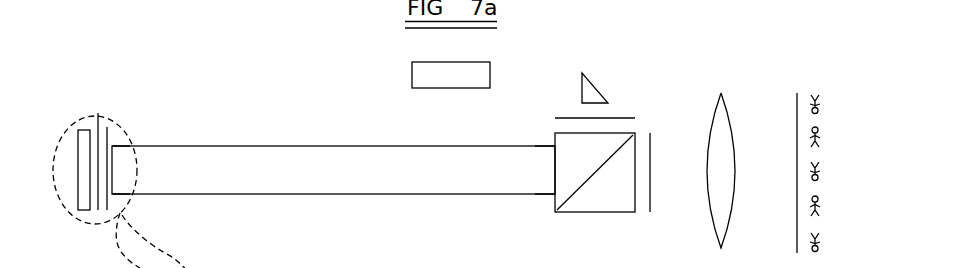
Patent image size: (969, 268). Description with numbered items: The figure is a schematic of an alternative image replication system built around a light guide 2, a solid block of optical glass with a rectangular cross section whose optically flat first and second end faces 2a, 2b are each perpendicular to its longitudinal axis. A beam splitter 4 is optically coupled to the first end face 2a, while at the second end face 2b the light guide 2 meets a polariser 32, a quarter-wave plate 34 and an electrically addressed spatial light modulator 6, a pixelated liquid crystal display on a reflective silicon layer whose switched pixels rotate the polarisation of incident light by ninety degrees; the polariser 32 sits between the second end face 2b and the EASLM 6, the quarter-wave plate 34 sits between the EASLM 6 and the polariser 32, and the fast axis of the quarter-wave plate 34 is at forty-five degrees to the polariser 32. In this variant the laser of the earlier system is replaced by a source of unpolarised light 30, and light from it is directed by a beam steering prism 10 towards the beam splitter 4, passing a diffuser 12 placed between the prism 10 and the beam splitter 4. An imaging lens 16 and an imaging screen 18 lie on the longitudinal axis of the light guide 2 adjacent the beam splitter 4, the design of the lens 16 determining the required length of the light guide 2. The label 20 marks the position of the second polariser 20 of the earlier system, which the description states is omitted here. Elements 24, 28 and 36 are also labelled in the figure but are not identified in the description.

The light guide 2 is at (320, 196).
The first end face 2a is at (553, 173).
The second end face 2b is at (126, 143).
The beam splitter 4 is at (593, 177).
The electrically addressed spatial light modulator 6 is at (77, 170).
The beam steering prism 10 is at (578, 90).
The diffuser 12 is at (622, 117).
The imaging lens 16 is at (722, 247).
The imaging screen 18 is at (797, 123).
The second polariser 20 is at (652, 148).
The objects 24 is at (808, 126).
The housing 28 is at (478, 264).
The source of unpolarised light 30 is at (411, 79).
The polariser 32 is at (107, 127).
The quarter-wave plate 34 is at (98, 113).
The detail region 36 is at (117, 192).